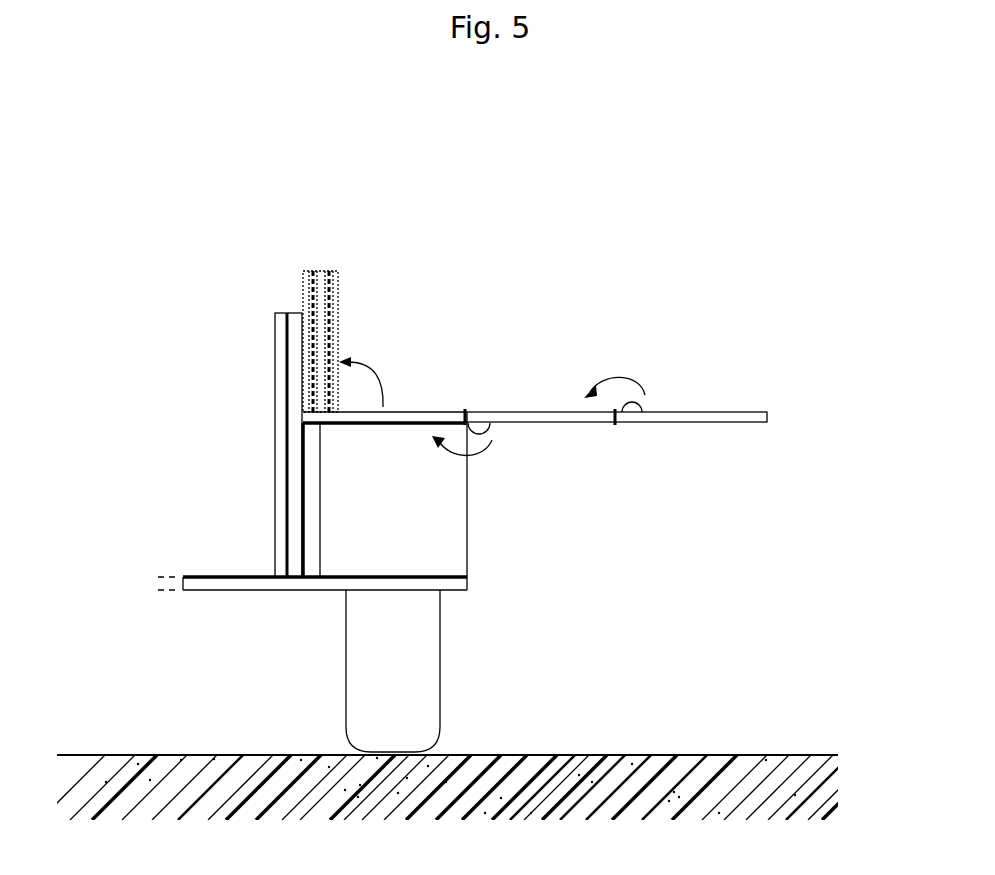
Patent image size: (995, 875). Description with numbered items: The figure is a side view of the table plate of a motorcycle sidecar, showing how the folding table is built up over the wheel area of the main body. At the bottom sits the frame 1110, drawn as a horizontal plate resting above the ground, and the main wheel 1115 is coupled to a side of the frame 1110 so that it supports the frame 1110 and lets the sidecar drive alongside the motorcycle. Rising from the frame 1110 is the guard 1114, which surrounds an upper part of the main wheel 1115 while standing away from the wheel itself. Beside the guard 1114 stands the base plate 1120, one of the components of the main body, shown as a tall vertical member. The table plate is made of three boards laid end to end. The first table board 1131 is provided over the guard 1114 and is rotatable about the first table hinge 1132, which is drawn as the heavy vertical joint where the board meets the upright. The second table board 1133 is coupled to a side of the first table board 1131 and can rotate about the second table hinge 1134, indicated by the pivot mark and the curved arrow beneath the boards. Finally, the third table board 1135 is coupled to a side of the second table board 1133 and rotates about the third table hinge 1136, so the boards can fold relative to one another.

The frame 1110 is at (468, 583).
The guard 1114 is at (455, 533).
The main wheel 1115 is at (427, 658).
The base plate 1120 is at (293, 315).
The first table board 1131 is at (405, 417).
The first table hinge 1132 is at (303, 428).
The second table board 1133 is at (562, 417).
The second table hinge 1134 is at (478, 419).
The third table board 1135 is at (732, 415).
The third table hinge 1136 is at (643, 422).